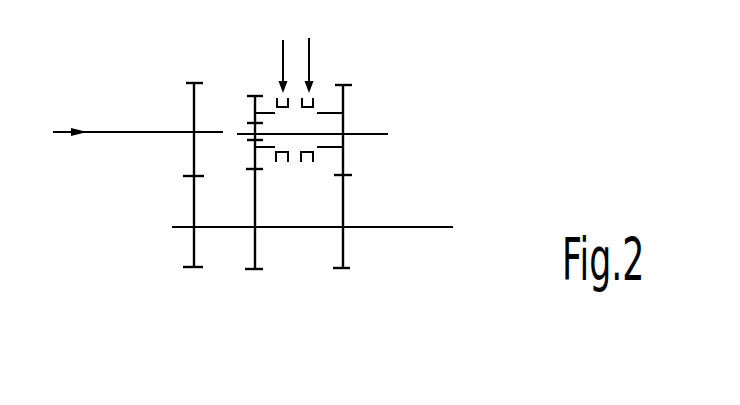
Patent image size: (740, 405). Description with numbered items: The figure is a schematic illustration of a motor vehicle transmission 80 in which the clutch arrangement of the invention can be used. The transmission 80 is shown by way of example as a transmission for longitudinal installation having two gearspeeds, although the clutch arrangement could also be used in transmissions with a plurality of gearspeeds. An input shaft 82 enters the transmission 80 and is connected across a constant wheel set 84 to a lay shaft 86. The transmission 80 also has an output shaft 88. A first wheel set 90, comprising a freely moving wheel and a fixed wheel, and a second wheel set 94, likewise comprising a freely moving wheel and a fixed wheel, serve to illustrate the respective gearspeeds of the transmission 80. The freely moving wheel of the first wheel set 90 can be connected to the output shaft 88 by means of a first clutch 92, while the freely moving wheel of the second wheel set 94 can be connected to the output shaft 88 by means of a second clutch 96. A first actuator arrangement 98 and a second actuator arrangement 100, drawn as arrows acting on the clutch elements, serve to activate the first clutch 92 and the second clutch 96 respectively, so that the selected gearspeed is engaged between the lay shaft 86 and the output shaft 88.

The transmission 80 is at (457, 160).
The input shaft 82 is at (160, 131).
The constant wheel set 84 is at (182, 203).
The lay shaft 86 is at (410, 228).
The output shaft 88 is at (372, 133).
The first wheel set 90 is at (245, 249).
The first clutch 92 is at (270, 185).
The second wheel set 94 is at (297, 308).
The second clutch 96 is at (319, 170).
The first actuator arrangement 98 is at (245, 45).
The second actuator arrangement 100 is at (309, 53).